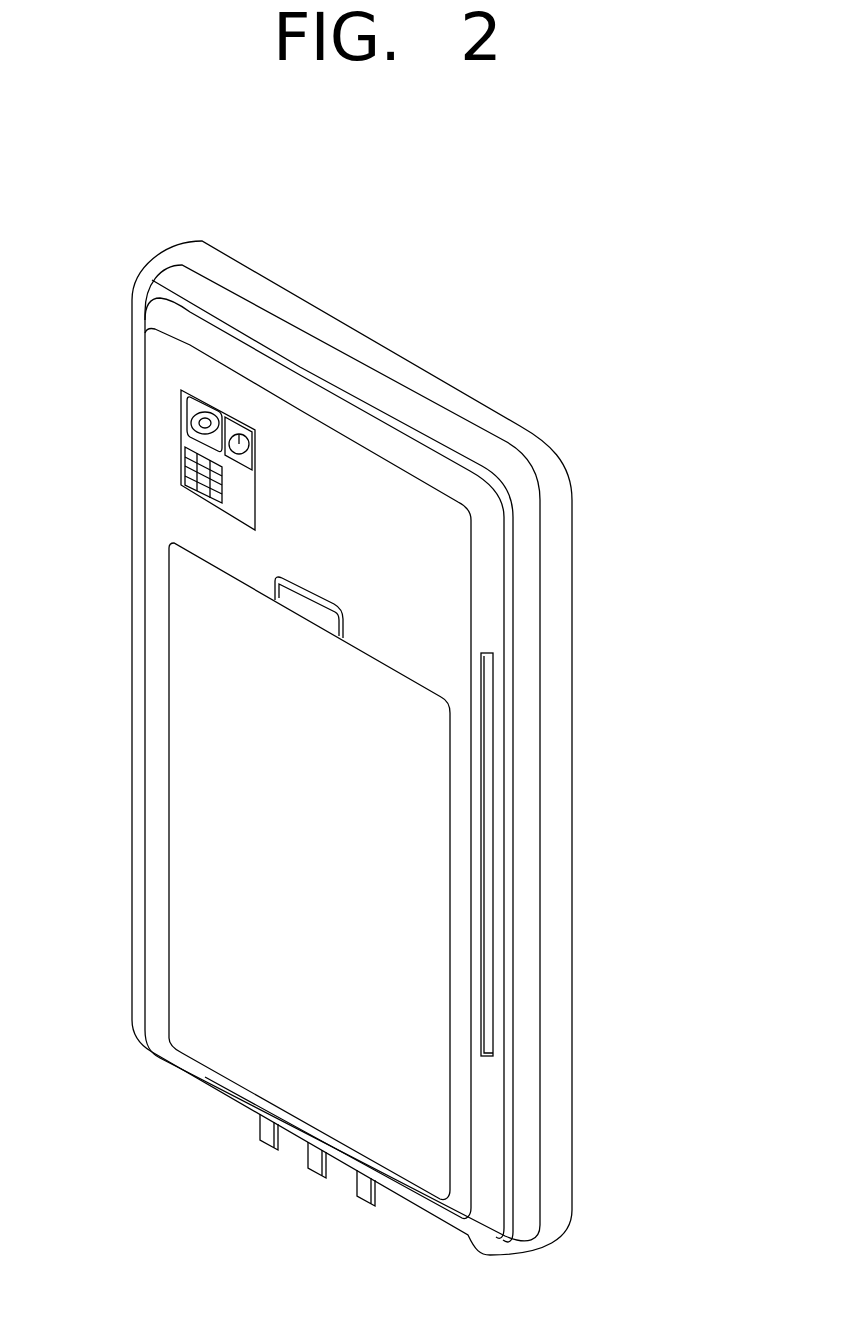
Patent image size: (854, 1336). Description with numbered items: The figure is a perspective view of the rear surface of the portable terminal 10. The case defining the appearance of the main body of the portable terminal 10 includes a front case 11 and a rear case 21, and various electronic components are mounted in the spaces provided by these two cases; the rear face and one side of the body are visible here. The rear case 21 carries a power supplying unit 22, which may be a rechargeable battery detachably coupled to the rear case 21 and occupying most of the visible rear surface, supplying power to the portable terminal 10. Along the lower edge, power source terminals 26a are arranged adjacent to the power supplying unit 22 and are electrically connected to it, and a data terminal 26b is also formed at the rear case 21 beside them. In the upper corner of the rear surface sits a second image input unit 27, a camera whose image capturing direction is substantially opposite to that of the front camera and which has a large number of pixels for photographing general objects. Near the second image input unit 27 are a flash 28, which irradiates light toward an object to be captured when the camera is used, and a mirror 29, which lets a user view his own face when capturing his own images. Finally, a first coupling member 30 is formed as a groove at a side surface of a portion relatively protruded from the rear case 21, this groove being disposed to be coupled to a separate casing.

The portable terminal 10 is at (605, 600).
The front case 11 is at (552, 644).
The rear case 21 is at (522, 703).
The power supplying unit 22 is at (180, 770).
The power source terminals 26a is at (268, 1150).
The data terminal 26b is at (365, 1206).
The second image input unit 27 is at (205, 421).
The flash 28 is at (190, 482).
The mirror 29 is at (186, 385).
The first coupling member 30 is at (487, 862).